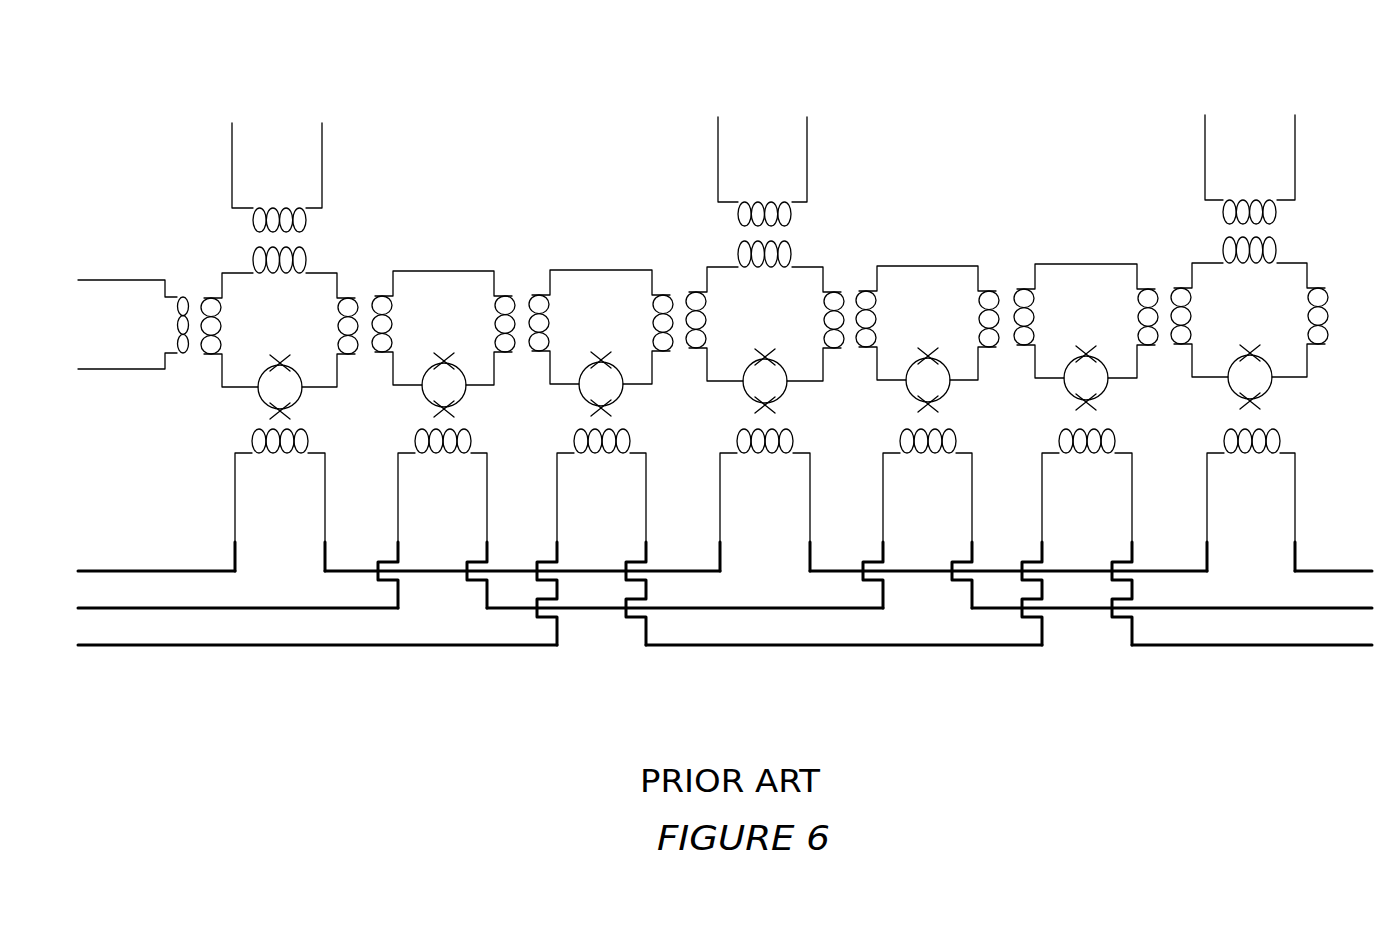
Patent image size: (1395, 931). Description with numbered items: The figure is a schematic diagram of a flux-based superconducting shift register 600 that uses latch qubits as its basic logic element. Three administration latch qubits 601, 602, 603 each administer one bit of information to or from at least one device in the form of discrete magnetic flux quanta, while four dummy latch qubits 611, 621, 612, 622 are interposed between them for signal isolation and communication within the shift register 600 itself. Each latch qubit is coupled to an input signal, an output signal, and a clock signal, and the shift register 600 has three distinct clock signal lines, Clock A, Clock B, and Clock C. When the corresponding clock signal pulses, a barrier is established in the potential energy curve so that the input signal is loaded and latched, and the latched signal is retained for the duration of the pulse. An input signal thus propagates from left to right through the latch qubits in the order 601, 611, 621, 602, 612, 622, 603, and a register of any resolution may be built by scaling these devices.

The shift register 600 is at (172, 128).
The latch qubit 601 is at (329, 278).
The latch qubit 611 is at (486, 276).
The latch qubit 621 is at (644, 275).
The latch qubit 602 is at (815, 272).
The latch qubit 612 is at (970, 271).
The latch qubit 622 is at (1129, 269).
The latch qubit 603 is at (1299, 268).